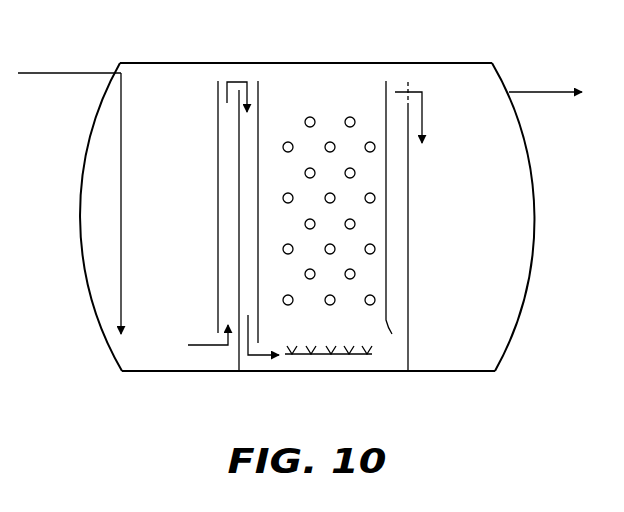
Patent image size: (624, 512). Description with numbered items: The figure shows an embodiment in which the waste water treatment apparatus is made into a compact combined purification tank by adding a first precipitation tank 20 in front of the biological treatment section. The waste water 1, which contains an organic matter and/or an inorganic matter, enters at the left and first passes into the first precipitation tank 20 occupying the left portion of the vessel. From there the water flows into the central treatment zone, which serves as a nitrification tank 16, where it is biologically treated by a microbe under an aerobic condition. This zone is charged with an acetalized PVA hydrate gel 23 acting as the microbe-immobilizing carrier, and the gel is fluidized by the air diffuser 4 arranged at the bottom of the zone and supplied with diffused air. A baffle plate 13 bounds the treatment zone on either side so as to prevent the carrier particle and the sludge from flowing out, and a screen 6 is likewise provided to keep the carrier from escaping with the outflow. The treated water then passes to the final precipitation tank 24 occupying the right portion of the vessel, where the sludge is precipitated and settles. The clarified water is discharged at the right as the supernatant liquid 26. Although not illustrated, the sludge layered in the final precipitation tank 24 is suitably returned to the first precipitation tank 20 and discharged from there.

The waste water 1 is at (67, 72).
The air diffuser 4 is at (333, 355).
The screen 6 is at (409, 82).
The baffle plate 13 is at (218, 200).
The nitrification tank 16 is at (344, 87).
The first precipitation tank 20 is at (97, 260).
The acetalized PVA hydrate gel 23 is at (288, 141).
The final precipitation tank 24 is at (517, 284).
The supernatant liquid 26 is at (545, 90).